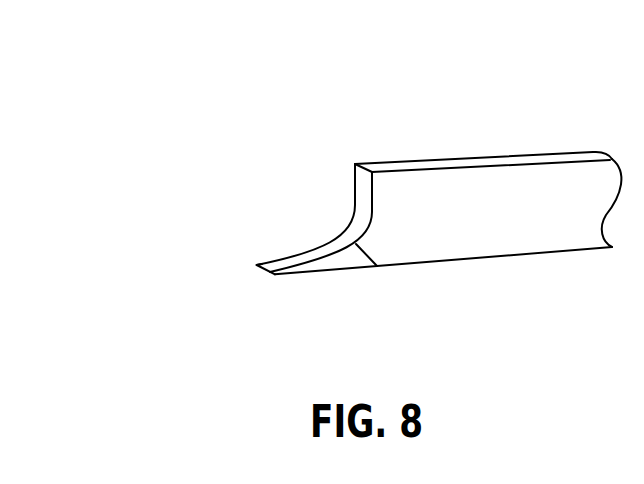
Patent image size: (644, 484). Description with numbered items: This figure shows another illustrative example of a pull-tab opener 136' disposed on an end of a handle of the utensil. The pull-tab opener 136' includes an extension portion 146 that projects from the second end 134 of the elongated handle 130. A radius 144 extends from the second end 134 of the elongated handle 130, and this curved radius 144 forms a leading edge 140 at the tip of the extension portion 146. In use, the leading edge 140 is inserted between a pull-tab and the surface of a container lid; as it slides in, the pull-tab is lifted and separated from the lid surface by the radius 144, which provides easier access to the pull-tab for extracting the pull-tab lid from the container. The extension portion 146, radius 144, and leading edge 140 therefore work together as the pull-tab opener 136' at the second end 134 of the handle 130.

The elongated handle 130 is at (400, 125).
The second end 134 is at (243, 220).
The pull-tab opener 136' is at (192, 253).
The leading edge 140 is at (257, 265).
The extension portion 146 is at (312, 252).
The radius 144 is at (377, 267).